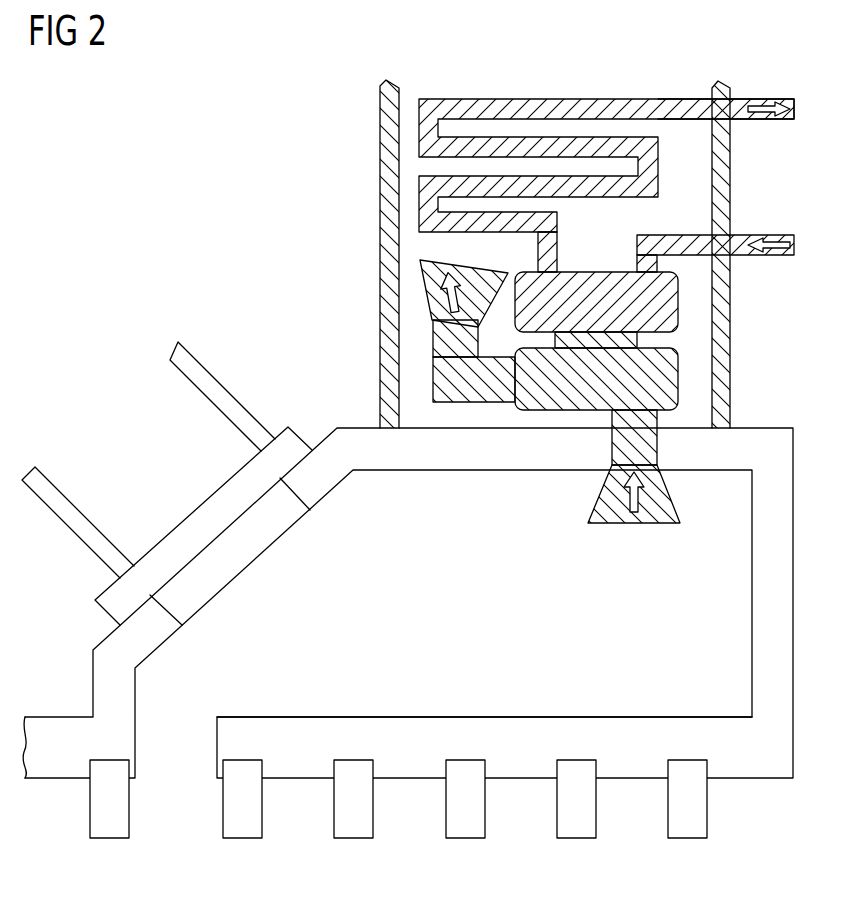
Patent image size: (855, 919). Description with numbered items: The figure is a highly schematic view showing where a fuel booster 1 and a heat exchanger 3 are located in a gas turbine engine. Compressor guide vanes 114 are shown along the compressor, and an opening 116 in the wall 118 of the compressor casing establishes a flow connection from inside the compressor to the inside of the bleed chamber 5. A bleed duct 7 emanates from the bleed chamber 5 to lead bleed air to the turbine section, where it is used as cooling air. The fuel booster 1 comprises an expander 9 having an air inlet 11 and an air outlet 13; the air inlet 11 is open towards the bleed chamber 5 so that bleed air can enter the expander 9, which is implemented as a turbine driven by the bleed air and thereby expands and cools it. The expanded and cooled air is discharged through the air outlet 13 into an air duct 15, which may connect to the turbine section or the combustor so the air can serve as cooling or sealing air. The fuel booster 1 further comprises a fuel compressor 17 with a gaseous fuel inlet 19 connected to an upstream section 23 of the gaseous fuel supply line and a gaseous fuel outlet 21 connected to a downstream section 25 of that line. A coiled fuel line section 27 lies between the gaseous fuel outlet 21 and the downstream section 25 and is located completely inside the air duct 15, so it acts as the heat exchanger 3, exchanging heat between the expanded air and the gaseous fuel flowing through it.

The fuel booster 1 is at (706, 333).
The heat exchanger 3 is at (606, 124).
The bleed chamber 5 is at (347, 510).
The bleed duct 7 is at (143, 398).
The expander 9 is at (555, 388).
The air inlet 11 is at (663, 512).
The air outlet 13 is at (437, 298).
The air duct 15 is at (387, 158).
The fuel compressor 17 is at (668, 290).
The gaseous fuel inlet 19 is at (637, 263).
The gaseous fuel outlet 21 is at (553, 226).
The upstream section of gaseous fuel supply line 23 is at (742, 236).
The downstream section of gaseous fuel supply line 25 is at (742, 99).
The coiled fuel line section 27 is at (490, 99).
The compressor guide vanes 114 is at (107, 840).
The opening 116 is at (180, 733).
The wall 118 is at (472, 725).